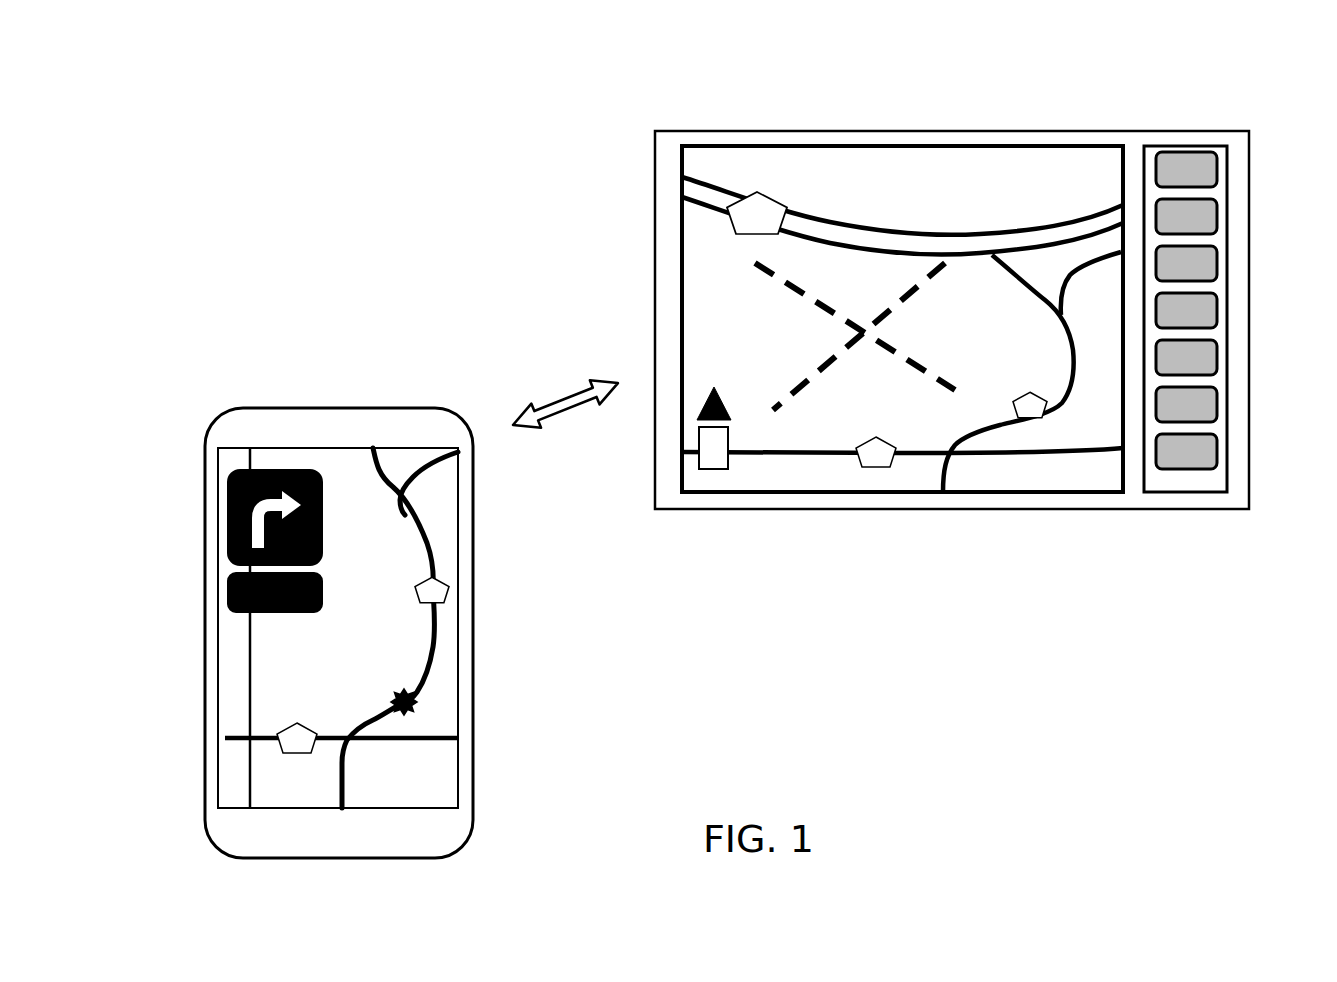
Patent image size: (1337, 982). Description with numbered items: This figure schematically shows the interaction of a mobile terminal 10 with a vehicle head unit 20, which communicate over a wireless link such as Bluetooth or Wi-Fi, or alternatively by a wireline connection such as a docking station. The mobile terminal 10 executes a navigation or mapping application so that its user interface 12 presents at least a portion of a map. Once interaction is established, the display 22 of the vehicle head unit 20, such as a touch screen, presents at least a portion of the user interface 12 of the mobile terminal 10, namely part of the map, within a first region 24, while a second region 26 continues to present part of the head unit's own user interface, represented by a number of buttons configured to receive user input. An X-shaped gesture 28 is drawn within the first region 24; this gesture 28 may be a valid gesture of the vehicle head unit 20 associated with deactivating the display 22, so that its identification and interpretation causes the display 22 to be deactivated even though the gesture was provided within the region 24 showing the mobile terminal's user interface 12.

The mobile terminal 10 is at (365, 588).
The user interface 12 is at (371, 628).
The vehicle head unit 20 is at (974, 276).
The display 22 is at (952, 285).
The first region 24 is at (902, 291).
The second region 26 is at (1218, 316).
The X-shaped gesture 28 is at (884, 336).